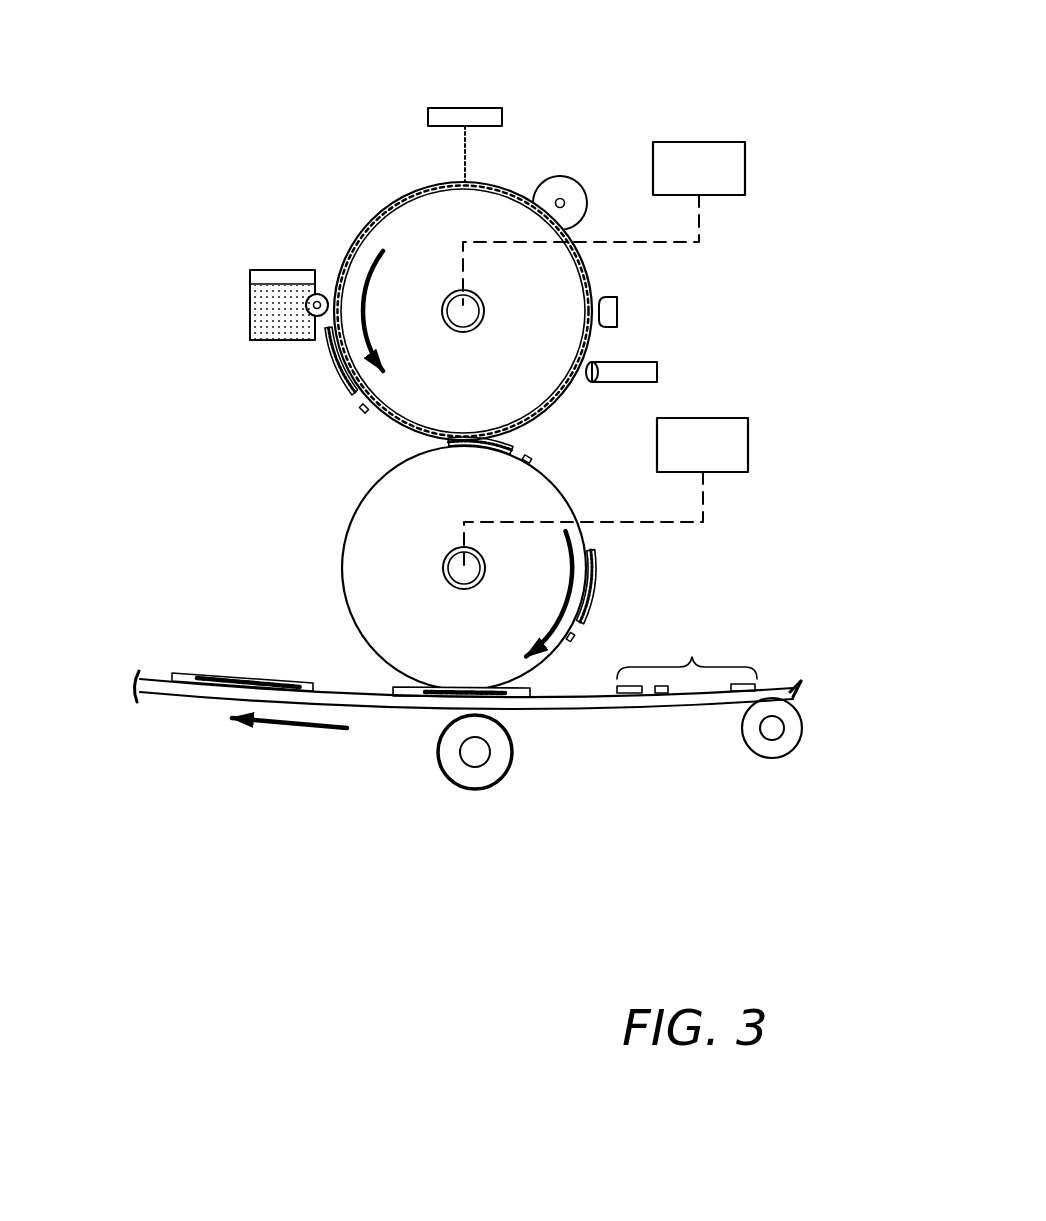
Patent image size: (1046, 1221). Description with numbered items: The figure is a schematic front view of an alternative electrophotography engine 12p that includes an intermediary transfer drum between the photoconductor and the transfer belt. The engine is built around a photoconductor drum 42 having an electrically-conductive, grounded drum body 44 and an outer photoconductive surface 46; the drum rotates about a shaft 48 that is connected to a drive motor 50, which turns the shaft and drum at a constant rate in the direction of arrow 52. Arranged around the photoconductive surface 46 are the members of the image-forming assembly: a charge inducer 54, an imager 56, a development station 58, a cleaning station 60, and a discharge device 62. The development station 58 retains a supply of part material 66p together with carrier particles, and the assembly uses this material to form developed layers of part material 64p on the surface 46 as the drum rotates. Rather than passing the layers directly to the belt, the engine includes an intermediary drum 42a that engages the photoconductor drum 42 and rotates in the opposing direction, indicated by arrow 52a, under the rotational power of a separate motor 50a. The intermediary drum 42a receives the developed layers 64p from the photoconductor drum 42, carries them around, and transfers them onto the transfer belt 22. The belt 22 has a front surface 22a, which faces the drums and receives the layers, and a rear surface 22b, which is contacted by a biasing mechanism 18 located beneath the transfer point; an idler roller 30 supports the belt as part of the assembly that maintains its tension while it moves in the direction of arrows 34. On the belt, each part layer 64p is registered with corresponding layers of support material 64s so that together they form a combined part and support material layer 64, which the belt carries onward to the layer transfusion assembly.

The EP engine 12p is at (205, 98).
The photoconductor drum 42 is at (352, 219).
The photoconductive surface 46 is at (398, 186).
The conductive drum body 44 is at (482, 394).
The shaft 48 is at (477, 315).
The arrow 52 is at (370, 278).
The charge inducer 54 is at (549, 180).
The imager 56 is at (486, 108).
The drive motor 50 is at (731, 142).
The development station 58 is at (245, 268).
The part material 66p is at (268, 300).
The discharge device 62 is at (617, 301).
The cleaning station 60 is at (638, 362).
The intermediary drum 42a is at (343, 518).
The arrow 52a is at (566, 545).
The motor 50a is at (734, 418).
The layers of part material 64p is at (332, 368).
The transfer belt 22 is at (153, 742).
The front surface 22a is at (792, 690).
The rear surface 22b is at (650, 708).
The combined part and support material layer 64 is at (228, 668).
The layers of support material 64s is at (403, 762).
The arrows 34 is at (288, 728).
The biasing mechanism 18 is at (492, 762).
The idler roller 30 is at (773, 750).